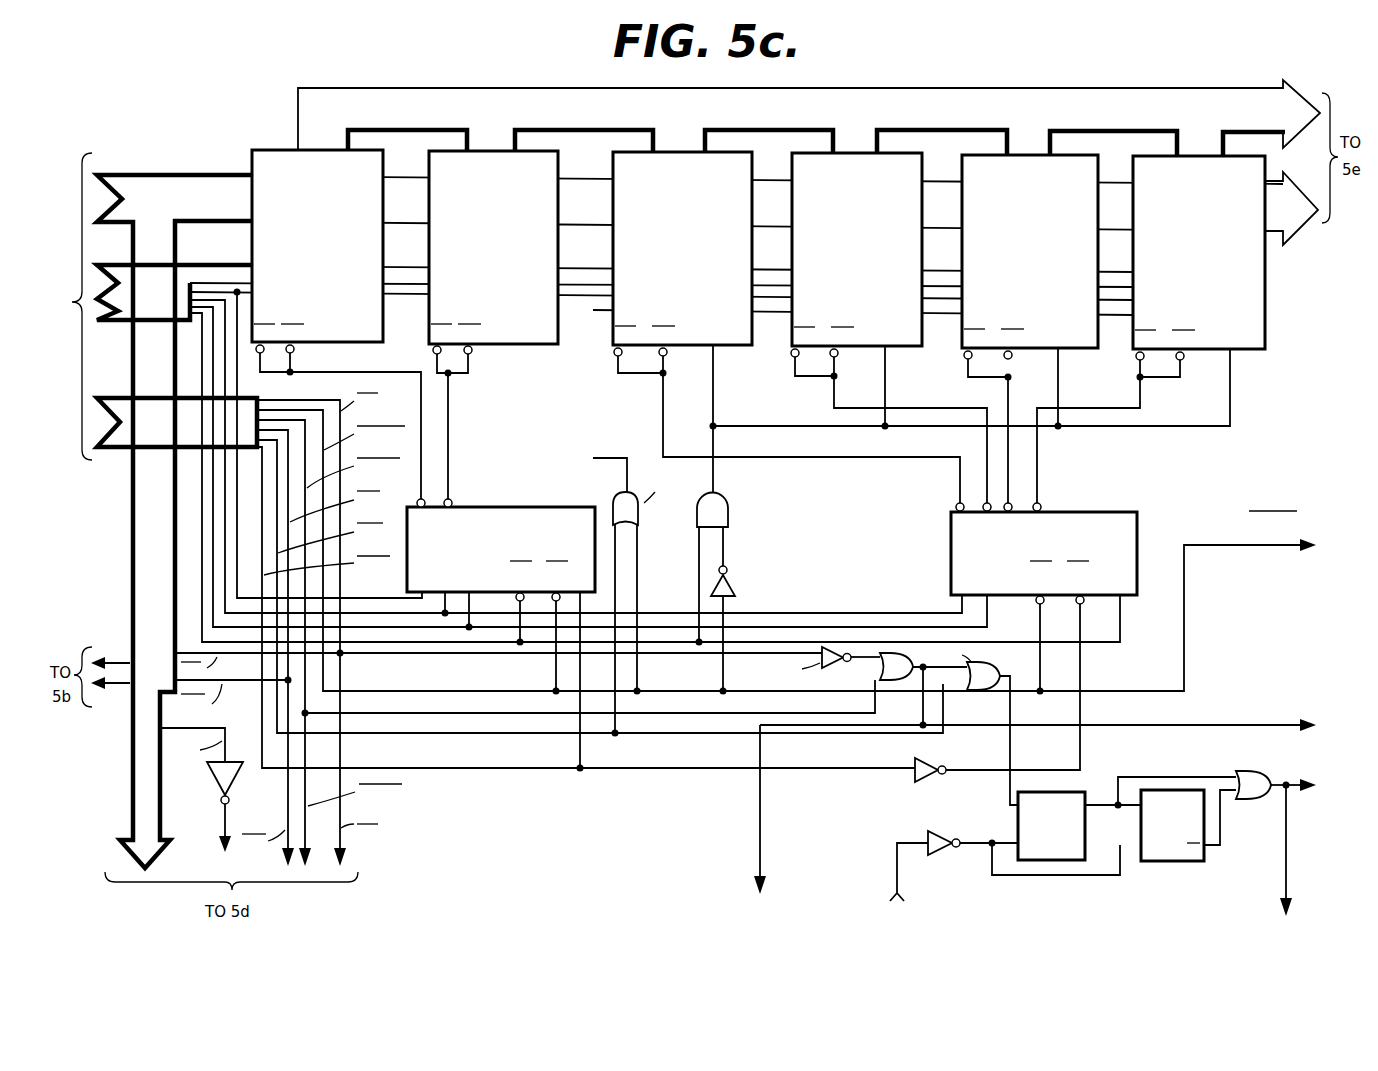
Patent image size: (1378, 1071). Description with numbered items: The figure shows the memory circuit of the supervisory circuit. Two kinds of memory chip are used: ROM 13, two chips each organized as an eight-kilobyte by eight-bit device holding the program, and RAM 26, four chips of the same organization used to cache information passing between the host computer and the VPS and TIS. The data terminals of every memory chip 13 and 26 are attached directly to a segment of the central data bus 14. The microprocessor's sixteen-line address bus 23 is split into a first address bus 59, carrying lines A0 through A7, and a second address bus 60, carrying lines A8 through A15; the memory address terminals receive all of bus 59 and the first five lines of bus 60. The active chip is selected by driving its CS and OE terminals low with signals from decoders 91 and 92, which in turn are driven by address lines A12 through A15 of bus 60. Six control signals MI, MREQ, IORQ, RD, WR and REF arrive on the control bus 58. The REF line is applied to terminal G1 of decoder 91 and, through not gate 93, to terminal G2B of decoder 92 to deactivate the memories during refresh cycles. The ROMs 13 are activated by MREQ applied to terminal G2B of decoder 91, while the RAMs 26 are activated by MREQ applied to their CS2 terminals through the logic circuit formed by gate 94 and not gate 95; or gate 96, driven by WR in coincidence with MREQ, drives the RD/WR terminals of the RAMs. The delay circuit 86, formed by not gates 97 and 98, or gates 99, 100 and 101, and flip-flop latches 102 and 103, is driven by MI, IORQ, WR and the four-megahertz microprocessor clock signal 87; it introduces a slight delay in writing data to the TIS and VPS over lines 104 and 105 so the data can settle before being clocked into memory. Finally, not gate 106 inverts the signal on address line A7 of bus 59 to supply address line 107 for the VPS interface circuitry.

The ROM 13 is at (385, 170).
The central data bus 14 is at (472, 97).
The address bus 23 is at (64, 194).
The RAM 26 is at (738, 175).
The control bus 58 is at (125, 404).
The first address bus 59 is at (186, 190).
The second address bus 60 is at (178, 268).
The delay circuit 86 is at (1248, 658).
The clock signal 87 is at (895, 857).
The decoder 91 is at (495, 506).
The decoder 92 is at (1092, 517).
The not gate 93 is at (916, 768).
The gate 94 is at (713, 499).
The not gate 95 is at (732, 572).
The or gate 96 is at (613, 494).
The not gate 97 is at (838, 668).
The not gate 98 is at (963, 815).
The or gate 99 is at (900, 682).
The or gate 100 is at (992, 688).
The or gate 101 is at (1250, 774).
The flip-flop latch 102 is at (1068, 856).
The flip-flop latch 103 is at (1180, 866).
The line 104 is at (762, 834).
The line 105 is at (1290, 848).
The not gate 106 is at (215, 796).
The address line 107 is at (218, 824).